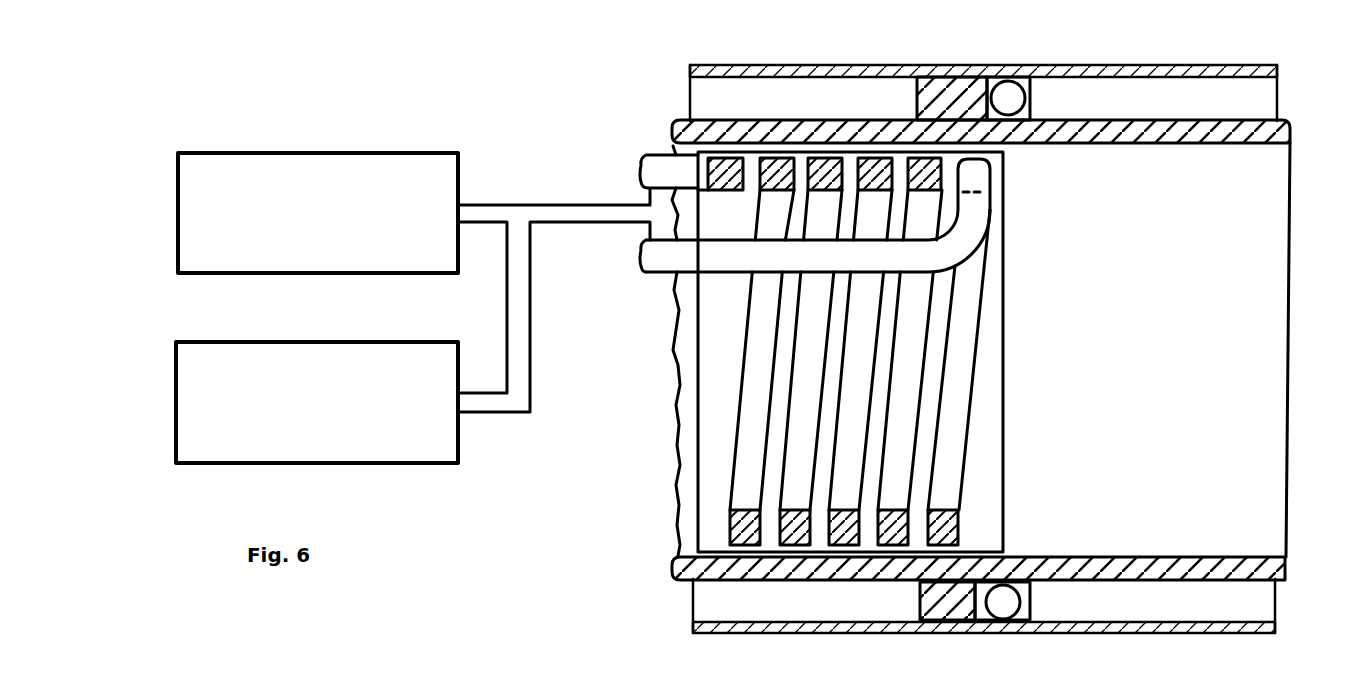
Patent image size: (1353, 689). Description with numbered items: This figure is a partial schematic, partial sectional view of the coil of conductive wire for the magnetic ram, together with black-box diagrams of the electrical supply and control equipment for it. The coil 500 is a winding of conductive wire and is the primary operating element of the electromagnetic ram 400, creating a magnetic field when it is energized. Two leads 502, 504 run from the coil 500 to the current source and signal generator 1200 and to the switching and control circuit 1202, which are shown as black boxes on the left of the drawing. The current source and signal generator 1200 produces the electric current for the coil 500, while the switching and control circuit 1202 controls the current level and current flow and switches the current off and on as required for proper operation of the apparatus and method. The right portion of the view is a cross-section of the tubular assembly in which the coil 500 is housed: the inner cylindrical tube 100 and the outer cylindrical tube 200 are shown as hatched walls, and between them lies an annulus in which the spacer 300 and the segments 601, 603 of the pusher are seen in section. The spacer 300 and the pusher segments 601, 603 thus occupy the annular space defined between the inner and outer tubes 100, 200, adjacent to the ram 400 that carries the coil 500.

The inner cylindrical tube 100 is at (675, 122).
The outer cylindrical tube 200 is at (1226, 66).
The spacer 300 is at (1033, 83).
The electromagnetic ram 400 is at (690, 379).
The coil 500 is at (747, 488).
The lead 502 is at (660, 165).
The lead 504 is at (660, 255).
The segment of the pusher 601 is at (907, 78).
The segment of the pusher 603 is at (920, 600).
The current source and signal generator 1200 is at (290, 151).
The switching and control circuit 1202 is at (283, 341).